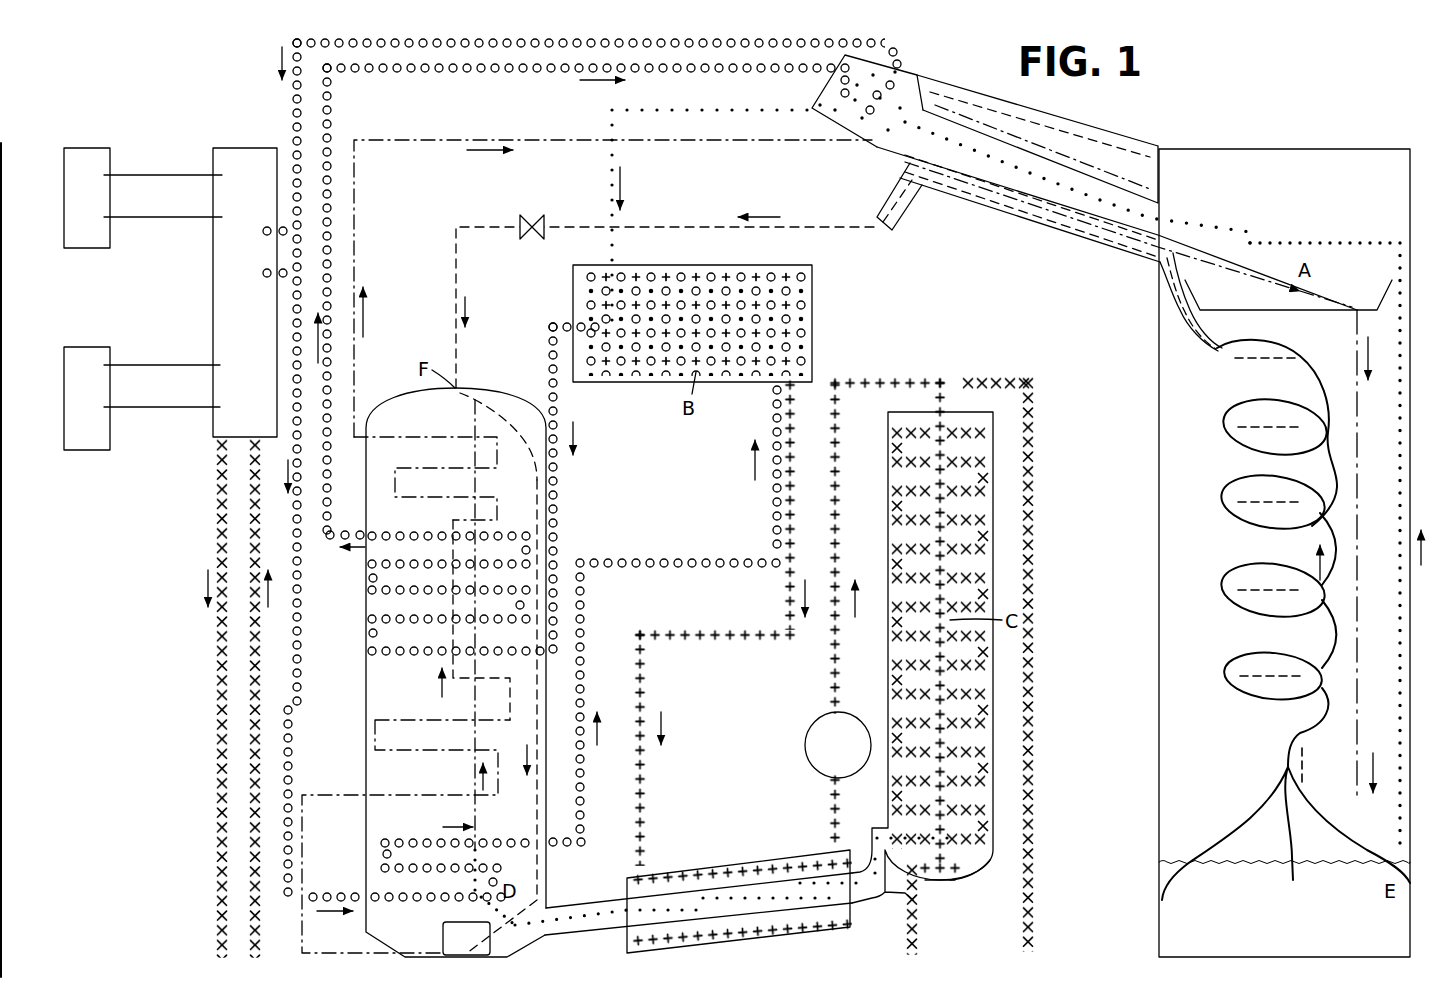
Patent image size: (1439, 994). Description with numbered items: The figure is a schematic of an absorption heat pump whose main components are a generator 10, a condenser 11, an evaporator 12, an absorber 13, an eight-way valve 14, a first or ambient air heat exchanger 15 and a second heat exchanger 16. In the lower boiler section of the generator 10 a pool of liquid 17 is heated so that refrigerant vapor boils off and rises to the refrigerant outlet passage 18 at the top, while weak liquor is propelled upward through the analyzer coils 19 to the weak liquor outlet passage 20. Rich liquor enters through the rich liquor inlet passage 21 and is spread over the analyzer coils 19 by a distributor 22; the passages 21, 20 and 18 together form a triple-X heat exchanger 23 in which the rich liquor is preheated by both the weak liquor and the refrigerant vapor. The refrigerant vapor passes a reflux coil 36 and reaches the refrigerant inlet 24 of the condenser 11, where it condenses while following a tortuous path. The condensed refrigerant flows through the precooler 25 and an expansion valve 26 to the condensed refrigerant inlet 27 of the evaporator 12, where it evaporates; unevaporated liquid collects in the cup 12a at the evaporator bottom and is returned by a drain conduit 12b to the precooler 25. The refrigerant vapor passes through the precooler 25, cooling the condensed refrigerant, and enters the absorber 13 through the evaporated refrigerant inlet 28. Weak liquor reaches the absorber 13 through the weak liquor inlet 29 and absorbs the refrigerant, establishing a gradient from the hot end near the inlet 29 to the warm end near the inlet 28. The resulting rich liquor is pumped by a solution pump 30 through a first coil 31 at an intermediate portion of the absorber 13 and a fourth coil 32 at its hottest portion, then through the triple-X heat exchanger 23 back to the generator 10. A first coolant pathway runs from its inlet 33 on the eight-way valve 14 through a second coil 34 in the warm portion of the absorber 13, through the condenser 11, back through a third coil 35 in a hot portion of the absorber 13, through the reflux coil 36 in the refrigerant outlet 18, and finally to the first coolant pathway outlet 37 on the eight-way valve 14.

The generator 10 is at (1157, 763).
The condenser 11 is at (815, 310).
The evaporator 12 is at (996, 662).
The cup 12a is at (965, 878).
The drain conduit 12b is at (940, 880).
The absorber 13 is at (405, 402).
The eight-way valve 14 is at (238, 147).
The first or ambient air heat exchanger 15 is at (88, 158).
The second heat exchanger 16 is at (95, 357).
The liquid 17 is at (1182, 907).
The refrigerant outlet passage 18 is at (987, 155).
The analyzer coils 19 is at (1226, 510).
The weak liquor outlet passage 20 is at (1092, 140).
The rich liquor inlet passage 21 is at (1040, 145).
The distributor 22 is at (1392, 280).
The triple-X heat exchanger 23 is at (1048, 240).
The refrigerant inlet 24 is at (608, 265).
The precooler 25 is at (739, 858).
The expansion valve 26 is at (818, 733).
The condensed refrigerant inlet 27 is at (944, 412).
The evaporated refrigerant inlet 28 is at (542, 934).
The weak liquor inlet 29 is at (458, 391).
The solution pump 30 is at (452, 935).
The first pathway or coil 31 is at (405, 720).
The fourth pathway or coil 32 is at (394, 482).
The inlet 33 is at (278, 274).
The second pathway portion or heat exchange coil 34 is at (385, 844).
The third pathway portion or coil 35 is at (367, 573).
The reflux coil 36 is at (918, 74).
The first coolant pathway outlet 37 is at (278, 226).